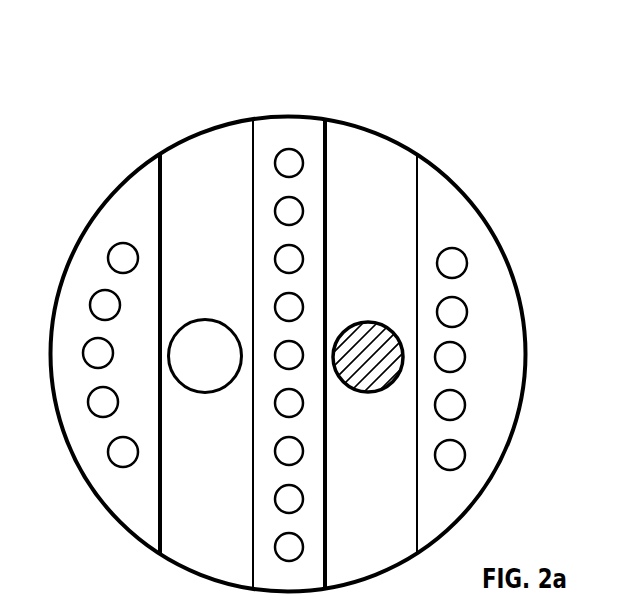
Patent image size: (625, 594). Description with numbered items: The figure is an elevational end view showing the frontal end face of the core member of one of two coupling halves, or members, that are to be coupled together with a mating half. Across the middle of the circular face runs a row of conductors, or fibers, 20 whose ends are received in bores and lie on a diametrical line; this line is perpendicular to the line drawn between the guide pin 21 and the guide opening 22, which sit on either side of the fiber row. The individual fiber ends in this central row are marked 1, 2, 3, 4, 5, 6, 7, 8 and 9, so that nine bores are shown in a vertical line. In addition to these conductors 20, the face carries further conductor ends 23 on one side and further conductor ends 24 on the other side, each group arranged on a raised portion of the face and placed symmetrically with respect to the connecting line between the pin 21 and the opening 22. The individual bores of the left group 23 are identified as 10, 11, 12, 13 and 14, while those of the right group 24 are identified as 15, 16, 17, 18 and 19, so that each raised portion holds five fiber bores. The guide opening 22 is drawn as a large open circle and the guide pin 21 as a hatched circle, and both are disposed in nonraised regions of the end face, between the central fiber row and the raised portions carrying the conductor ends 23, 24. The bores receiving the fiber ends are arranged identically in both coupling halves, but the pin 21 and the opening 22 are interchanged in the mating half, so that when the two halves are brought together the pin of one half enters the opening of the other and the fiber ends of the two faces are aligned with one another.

The sample port 1 is at (295, 159).
The sample port 2 is at (295, 207).
The sample port 3 is at (295, 255).
The sample port 4 is at (295, 304).
The sample port 5 is at (295, 351).
The sample port 6 is at (295, 399).
The sample port 7 is at (295, 447).
The sample port 8 is at (295, 495).
The sample port 9 is at (295, 543).
The reagent port 10 is at (111, 451).
The reagent port 11 is at (92, 401).
The reagent port 12 is at (87, 352).
The reagent port 13 is at (93, 300).
The reagent port 14 is at (113, 251).
The outlet port 15 is at (462, 256).
The outlet port 16 is at (462, 305).
The outlet port 17 is at (461, 352).
The outlet port 18 is at (461, 400).
The outlet port 19 is at (461, 449).
The conductors 20 is at (283, 361).
The guide pin 21 is at (375, 380).
The guide opening 22 is at (198, 375).
The conductor ends 23 is at (92, 359).
The conductor ends 24 is at (455, 362).